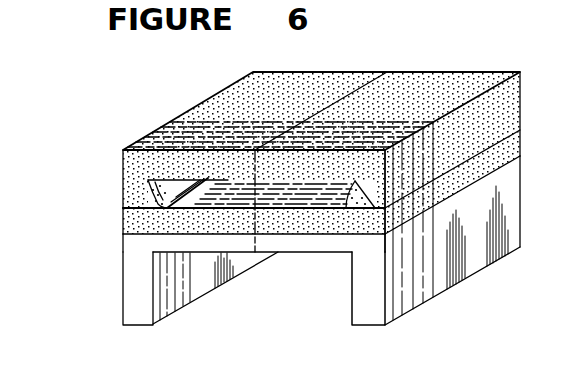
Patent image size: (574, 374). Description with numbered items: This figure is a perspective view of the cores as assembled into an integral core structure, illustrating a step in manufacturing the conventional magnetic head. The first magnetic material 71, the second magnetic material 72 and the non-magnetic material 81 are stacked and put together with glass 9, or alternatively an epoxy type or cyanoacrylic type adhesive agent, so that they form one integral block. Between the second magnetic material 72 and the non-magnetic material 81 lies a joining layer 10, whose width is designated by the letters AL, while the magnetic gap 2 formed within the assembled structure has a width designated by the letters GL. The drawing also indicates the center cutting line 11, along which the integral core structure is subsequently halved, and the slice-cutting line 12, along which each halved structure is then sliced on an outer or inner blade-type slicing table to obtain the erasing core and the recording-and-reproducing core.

The magnetic gap 2 is at (123, 207).
The glass 9 is at (148, 179).
The joining layer 10 is at (123, 238).
The center cutting line 11 is at (366, 88).
The slice-cutting line 12 is at (396, 306).
The first magnetic material 71 is at (123, 172).
The second magnetic material 72 is at (123, 218).
The non-magnetic material 81 is at (123, 285).